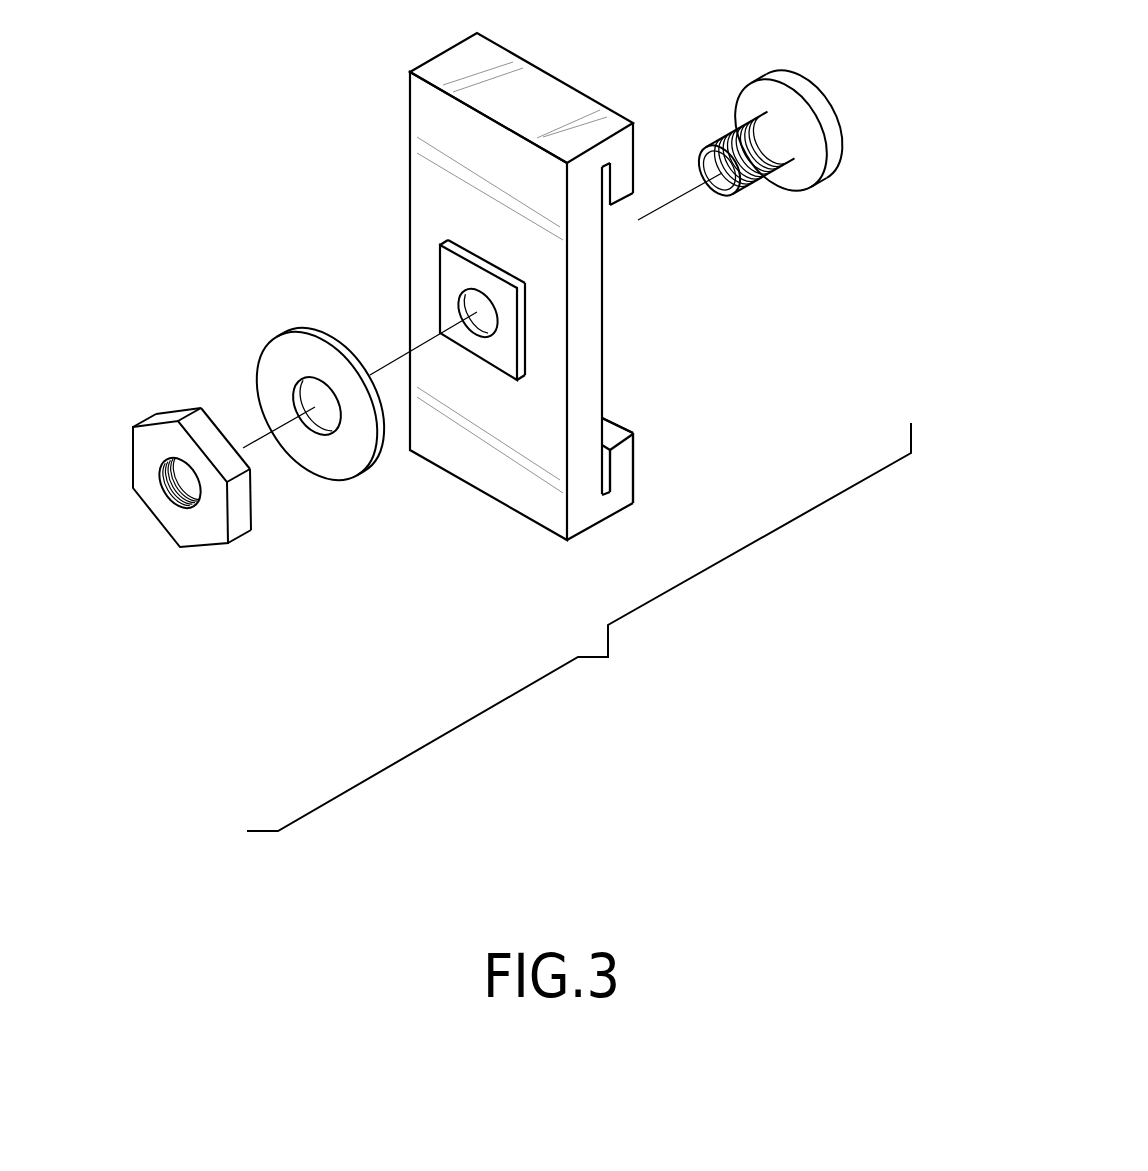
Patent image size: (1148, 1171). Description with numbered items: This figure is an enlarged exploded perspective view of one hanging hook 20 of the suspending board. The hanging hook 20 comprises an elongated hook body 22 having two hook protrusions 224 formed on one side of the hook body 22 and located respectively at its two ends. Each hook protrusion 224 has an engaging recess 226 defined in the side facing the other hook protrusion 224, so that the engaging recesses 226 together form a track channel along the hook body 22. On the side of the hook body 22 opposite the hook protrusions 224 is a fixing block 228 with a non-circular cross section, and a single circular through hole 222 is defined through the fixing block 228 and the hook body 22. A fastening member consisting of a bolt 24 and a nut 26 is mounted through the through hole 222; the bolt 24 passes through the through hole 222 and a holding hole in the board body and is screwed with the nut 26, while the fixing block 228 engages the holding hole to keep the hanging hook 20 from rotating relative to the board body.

The hanging hook 20 is at (318, 107).
The hook body 22 is at (630, 321).
The through hole 222 is at (492, 327).
The hook protrusion 224 is at (620, 453).
The engaging recess 226 is at (607, 477).
The fixing block 228 is at (453, 268).
The bolt 24 is at (778, 87).
The nut 26 is at (165, 438).